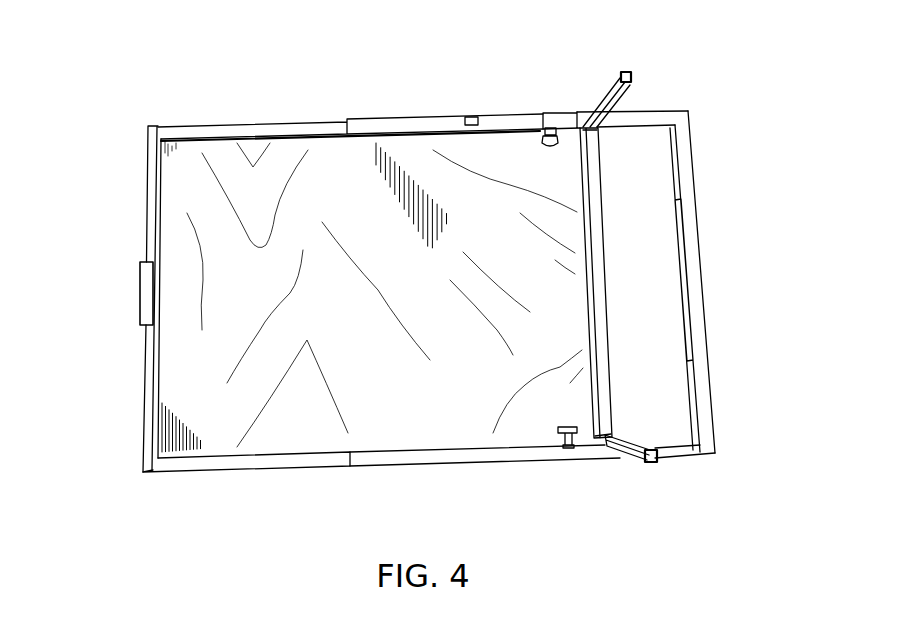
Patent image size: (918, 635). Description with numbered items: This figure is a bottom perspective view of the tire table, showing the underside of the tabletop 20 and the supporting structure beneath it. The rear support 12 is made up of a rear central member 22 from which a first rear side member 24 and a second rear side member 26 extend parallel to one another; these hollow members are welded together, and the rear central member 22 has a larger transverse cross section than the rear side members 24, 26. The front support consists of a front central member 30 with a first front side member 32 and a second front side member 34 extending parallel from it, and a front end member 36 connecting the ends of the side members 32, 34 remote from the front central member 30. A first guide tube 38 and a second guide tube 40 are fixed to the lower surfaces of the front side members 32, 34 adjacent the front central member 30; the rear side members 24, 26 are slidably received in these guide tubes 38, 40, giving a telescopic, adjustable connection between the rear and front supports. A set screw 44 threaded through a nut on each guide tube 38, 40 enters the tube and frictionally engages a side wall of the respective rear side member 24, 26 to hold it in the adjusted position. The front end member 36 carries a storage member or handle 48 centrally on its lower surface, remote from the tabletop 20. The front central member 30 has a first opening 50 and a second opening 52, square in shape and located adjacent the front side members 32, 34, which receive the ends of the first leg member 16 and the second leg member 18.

The rear support 12 is at (674, 283).
The first leg member 16 is at (600, 96).
The second leg member 18 is at (633, 453).
The tabletop 20 is at (406, 300).
The rear central member 22 is at (698, 280).
The first rear side member 24 is at (653, 113).
The second rear side member 26 is at (683, 452).
The front central member 30 is at (598, 330).
The first front side member 32 is at (258, 130).
The second front side member 34 is at (255, 462).
The front end member 36 is at (151, 184).
The first guide tube 38 is at (558, 113).
The second guide tube 40 is at (578, 452).
The set screw 44 is at (543, 139).
The storage member or handle 48 is at (148, 288).
The first opening 50 is at (592, 137).
The second opening 52 is at (605, 436).